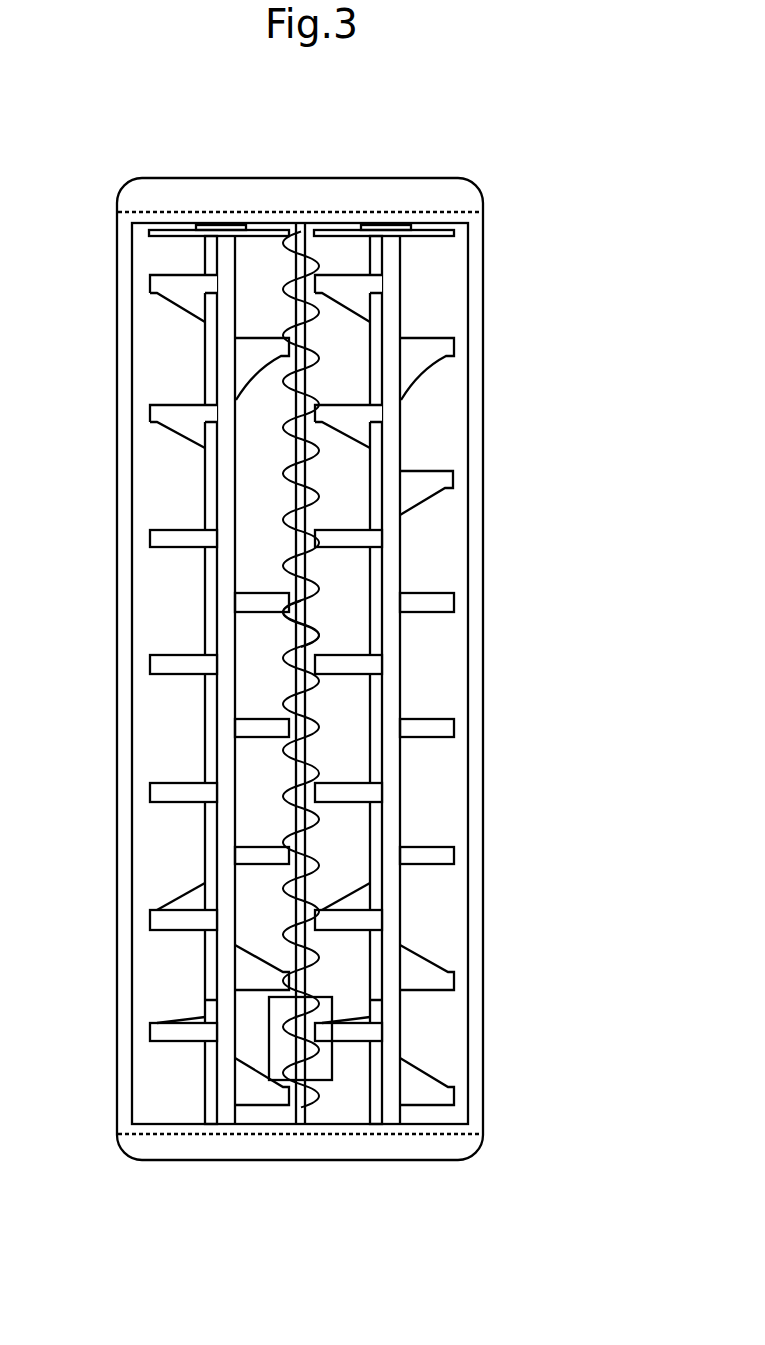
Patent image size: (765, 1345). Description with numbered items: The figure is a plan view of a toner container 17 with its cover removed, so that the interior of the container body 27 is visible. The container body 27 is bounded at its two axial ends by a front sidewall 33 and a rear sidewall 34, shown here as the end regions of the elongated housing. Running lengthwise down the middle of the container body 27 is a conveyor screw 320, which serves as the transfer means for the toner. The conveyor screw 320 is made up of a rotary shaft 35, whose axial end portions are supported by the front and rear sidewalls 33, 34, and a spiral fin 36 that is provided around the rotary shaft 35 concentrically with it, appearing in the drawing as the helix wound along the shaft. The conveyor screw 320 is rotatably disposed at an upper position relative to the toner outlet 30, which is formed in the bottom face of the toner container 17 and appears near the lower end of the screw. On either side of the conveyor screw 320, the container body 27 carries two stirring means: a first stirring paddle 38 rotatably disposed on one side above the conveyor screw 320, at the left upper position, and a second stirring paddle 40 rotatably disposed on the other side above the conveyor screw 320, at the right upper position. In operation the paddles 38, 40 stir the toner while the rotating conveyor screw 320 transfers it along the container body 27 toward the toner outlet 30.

The toner container 17 is at (522, 202).
The container body 27 is at (484, 379).
The rear sidewall 34 is at (318, 177).
The front sidewall 33 is at (317, 1160).
The first stirring paddle 38 is at (147, 643).
The second stirring paddle 40 is at (446, 532).
The rotary shaft 35 is at (310, 702).
The spiral fin 36 is at (315, 682).
The conveyor screw 320 is at (318, 650).
The toner outlet 30 is at (332, 1013).